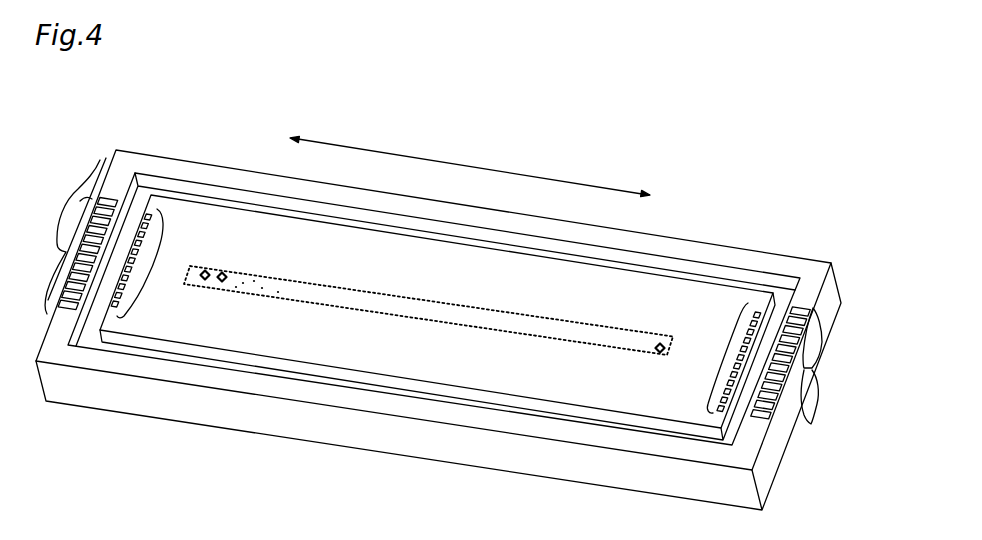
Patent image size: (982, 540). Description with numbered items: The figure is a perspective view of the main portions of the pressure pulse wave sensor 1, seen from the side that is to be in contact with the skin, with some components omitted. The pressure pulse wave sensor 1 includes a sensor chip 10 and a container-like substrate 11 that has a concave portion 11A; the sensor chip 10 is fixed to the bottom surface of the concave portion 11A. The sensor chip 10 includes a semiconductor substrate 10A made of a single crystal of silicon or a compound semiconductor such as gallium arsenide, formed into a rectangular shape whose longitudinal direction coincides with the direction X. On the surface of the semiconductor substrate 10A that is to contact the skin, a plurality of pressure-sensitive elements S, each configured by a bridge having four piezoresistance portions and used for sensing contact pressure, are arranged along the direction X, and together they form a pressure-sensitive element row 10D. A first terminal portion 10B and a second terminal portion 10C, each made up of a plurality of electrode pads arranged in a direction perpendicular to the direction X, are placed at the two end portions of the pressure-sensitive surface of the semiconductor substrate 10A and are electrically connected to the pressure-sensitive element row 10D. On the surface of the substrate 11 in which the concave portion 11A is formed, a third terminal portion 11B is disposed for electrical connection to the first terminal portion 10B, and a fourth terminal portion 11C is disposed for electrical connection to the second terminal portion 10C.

The pressure pulse wave sensor 1 is at (567, 127).
The sensor chip 10 is at (507, 379).
The semiconductor substrate 10A is at (397, 360).
The first terminal portion 10B is at (153, 273).
The second terminal portion 10C is at (724, 361).
The pressure-sensitive element row 10D is at (630, 335).
The substrate 11 is at (230, 421).
The concave portion 11A is at (91, 338).
The third terminal portion 11B is at (100, 160).
The fourth terminal portion 11C is at (811, 424).
The pressure-sensitive element S is at (206, 268).
The direction X is at (470, 166).